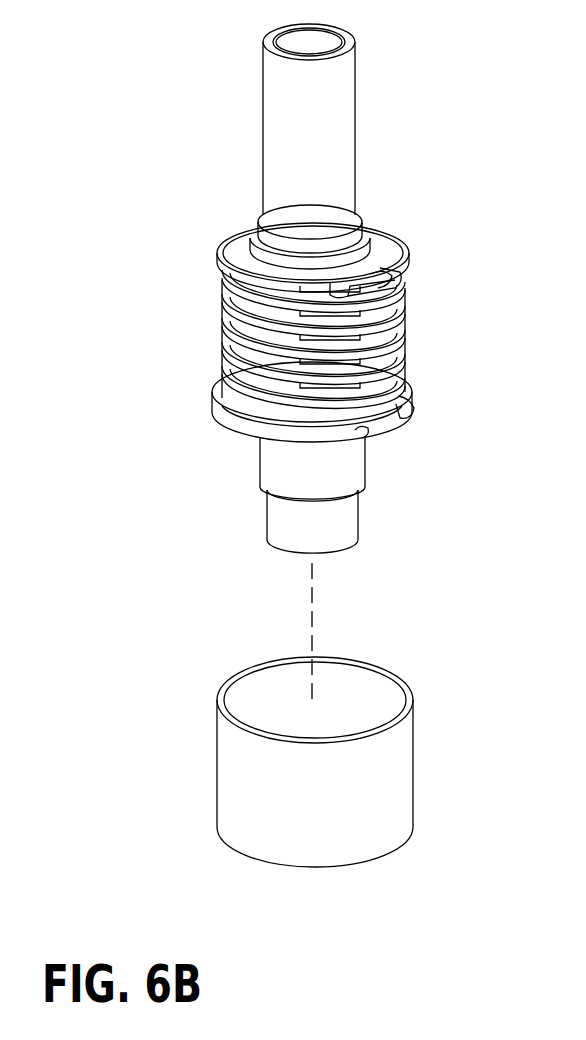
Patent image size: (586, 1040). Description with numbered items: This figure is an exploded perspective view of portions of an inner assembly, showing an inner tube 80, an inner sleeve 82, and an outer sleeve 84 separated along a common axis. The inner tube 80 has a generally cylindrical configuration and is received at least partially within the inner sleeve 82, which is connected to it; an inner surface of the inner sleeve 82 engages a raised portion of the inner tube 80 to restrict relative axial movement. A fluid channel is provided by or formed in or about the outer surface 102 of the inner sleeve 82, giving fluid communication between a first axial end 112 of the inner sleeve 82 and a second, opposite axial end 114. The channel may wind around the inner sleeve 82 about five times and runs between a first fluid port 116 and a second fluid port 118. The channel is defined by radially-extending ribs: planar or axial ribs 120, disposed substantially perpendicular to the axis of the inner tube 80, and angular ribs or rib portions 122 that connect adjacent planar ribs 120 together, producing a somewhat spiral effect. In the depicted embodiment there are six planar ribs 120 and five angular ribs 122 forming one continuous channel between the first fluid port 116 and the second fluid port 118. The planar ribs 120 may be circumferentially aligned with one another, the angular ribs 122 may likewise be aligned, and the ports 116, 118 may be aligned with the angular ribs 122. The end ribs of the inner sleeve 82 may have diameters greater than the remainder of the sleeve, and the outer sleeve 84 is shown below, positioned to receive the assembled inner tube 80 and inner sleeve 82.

The inner tube 80 is at (277, 97).
The inner sleeve 82 is at (372, 226).
The outer sleeve 84 is at (240, 744).
The outer surface 102 is at (247, 441).
The first axial end 112 is at (420, 283).
The second axial end 114 is at (192, 438).
The first fluid port 116 is at (382, 263).
The second fluid port 118 is at (369, 435).
The planar ribs 120 is at (212, 407).
The angular ribs 122 is at (404, 303).